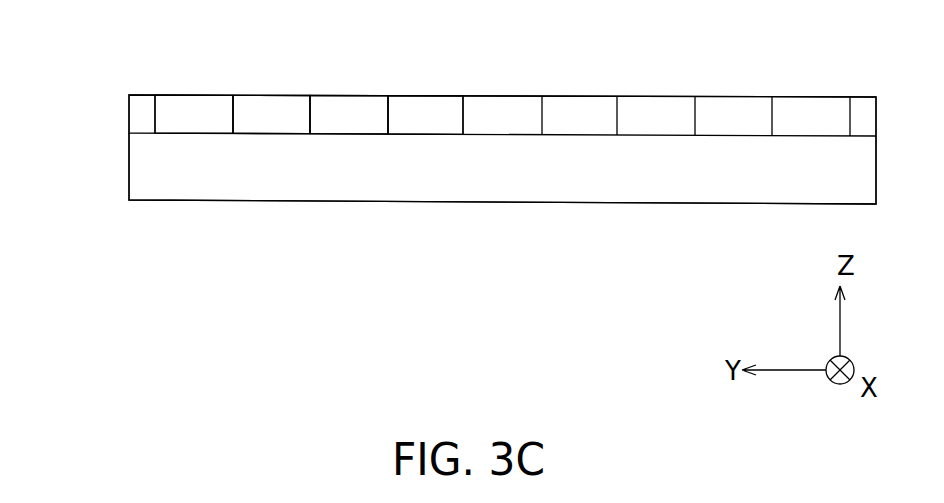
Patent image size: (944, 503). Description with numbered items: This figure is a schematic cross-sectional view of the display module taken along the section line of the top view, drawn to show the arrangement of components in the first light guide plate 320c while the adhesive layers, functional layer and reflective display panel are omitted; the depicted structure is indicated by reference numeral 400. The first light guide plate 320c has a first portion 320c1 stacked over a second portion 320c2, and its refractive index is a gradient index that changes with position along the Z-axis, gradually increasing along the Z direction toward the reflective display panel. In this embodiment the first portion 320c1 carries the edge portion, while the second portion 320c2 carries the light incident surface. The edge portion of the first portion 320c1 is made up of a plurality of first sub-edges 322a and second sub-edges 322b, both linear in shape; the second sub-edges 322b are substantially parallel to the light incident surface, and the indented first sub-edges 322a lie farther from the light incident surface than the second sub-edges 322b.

The first light guide plate 320c is at (460, 163).
The first portion 320c1 is at (126, 133).
The second portion 320c2 is at (408, 182).
The first sub-edges 322a is at (182, 110).
The second sub-edges 322b is at (272, 108).
The structure 400 is at (154, 329).